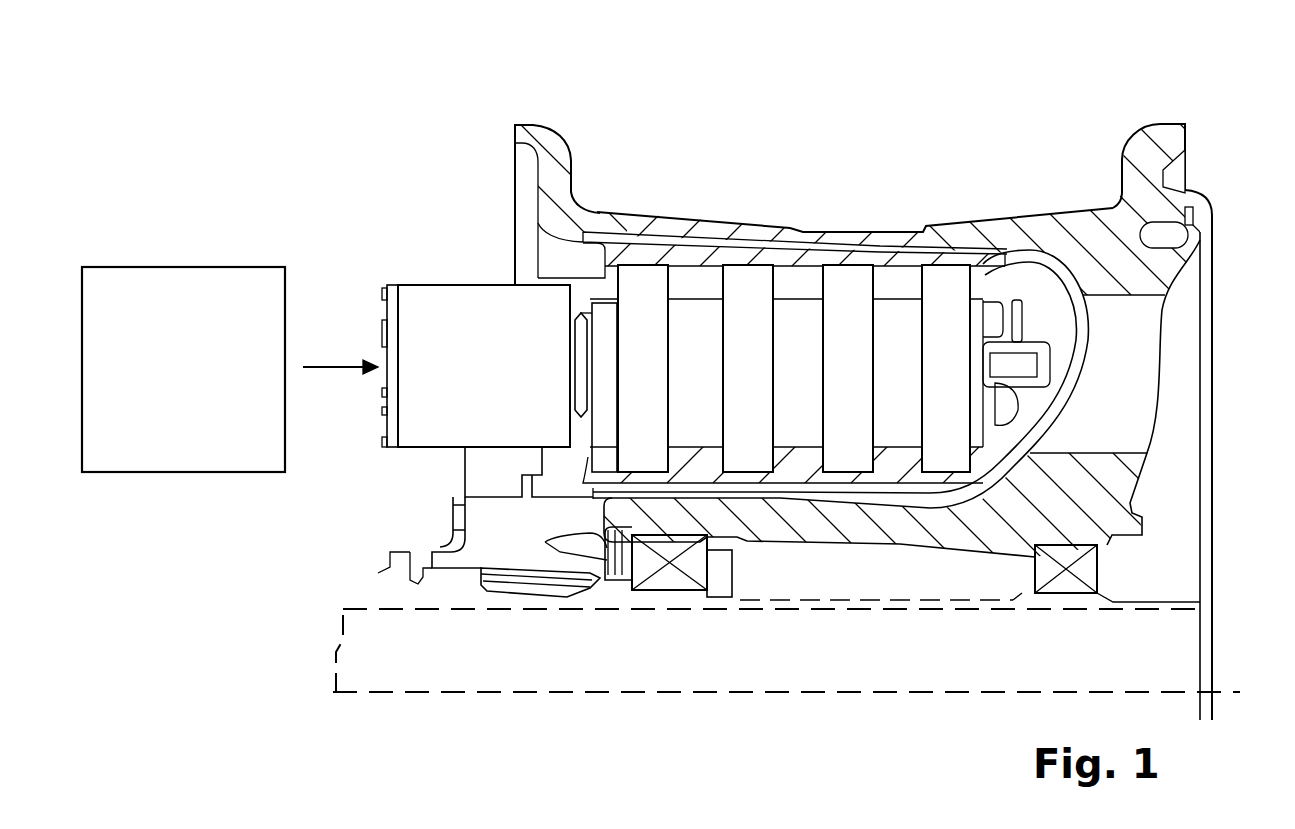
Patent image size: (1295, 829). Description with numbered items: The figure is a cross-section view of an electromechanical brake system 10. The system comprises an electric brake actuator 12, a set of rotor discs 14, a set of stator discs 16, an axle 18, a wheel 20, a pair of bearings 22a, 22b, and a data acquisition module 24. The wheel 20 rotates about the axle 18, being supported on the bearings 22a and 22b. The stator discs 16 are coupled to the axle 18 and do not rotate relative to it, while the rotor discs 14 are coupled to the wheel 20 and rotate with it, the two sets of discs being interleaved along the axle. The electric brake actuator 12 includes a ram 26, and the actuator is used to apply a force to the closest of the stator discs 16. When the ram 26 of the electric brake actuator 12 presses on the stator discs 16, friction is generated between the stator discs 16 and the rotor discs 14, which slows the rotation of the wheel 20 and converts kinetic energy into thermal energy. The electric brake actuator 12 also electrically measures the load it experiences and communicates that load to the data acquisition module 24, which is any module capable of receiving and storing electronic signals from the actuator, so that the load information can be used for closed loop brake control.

The electromechanical brake system 10 is at (1052, 127).
The electric brake actuator 12 is at (447, 283).
The rotor discs 14 is at (631, 300).
The stator discs 16 is at (684, 337).
The axle 18 is at (887, 610).
The wheel 20 is at (1137, 327).
The bearing 22a is at (1083, 572).
The bearing 22b is at (693, 565).
The data acquisition module 24 is at (173, 414).
The ram 26 is at (578, 342).